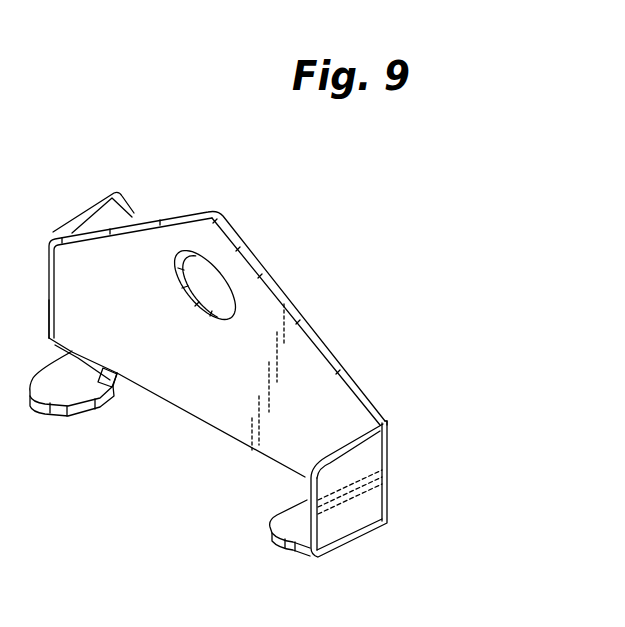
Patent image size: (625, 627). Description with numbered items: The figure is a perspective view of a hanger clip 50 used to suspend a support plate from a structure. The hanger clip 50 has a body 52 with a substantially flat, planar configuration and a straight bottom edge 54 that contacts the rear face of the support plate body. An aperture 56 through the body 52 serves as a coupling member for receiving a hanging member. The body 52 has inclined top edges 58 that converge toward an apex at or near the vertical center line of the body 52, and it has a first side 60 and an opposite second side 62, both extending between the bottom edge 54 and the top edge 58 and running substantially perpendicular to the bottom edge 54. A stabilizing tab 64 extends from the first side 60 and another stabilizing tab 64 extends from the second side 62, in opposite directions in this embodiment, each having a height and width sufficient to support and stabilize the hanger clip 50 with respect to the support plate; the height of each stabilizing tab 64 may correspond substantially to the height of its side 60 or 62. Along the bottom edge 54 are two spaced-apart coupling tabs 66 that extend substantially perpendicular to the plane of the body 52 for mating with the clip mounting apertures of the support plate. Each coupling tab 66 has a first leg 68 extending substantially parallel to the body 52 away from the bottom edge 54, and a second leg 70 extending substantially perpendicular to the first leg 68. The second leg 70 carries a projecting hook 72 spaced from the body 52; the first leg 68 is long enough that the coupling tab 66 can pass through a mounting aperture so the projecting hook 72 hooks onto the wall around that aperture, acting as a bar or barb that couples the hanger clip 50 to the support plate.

The hanger clip 50 is at (375, 275).
The body 52 is at (163, 368).
The bottom edge 54 is at (214, 447).
The aperture 56 is at (208, 287).
The inclined top edge 58 is at (153, 212).
The first side 60 is at (388, 428).
The second side 62 is at (44, 280).
The stabilizing tab 64 is at (82, 213).
The coupling tab 66 is at (158, 464).
The first leg 68 is at (116, 372).
The second leg 70 is at (40, 366).
The projecting hook 72 is at (45, 413).